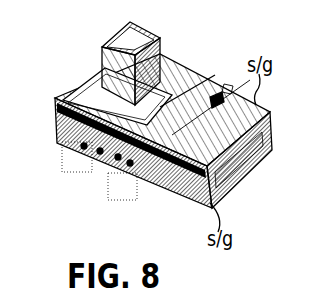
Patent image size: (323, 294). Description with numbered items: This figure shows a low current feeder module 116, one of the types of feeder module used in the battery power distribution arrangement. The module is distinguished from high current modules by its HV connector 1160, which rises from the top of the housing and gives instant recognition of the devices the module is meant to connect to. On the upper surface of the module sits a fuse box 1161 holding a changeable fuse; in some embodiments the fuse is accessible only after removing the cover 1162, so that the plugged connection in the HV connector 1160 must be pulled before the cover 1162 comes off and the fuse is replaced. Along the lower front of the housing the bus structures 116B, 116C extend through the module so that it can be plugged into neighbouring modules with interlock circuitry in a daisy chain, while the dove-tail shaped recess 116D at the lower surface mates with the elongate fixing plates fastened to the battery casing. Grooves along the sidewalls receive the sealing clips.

The low current feeder module 116 is at (238, 158).
The bus structure 116B is at (80, 147).
The bus structure 116C is at (129, 160).
The dove-tail shaped recess 116D is at (121, 156).
The HV connector 1160 is at (110, 66).
The fuse box 1161 is at (230, 90).
The cover 1162 is at (238, 122).